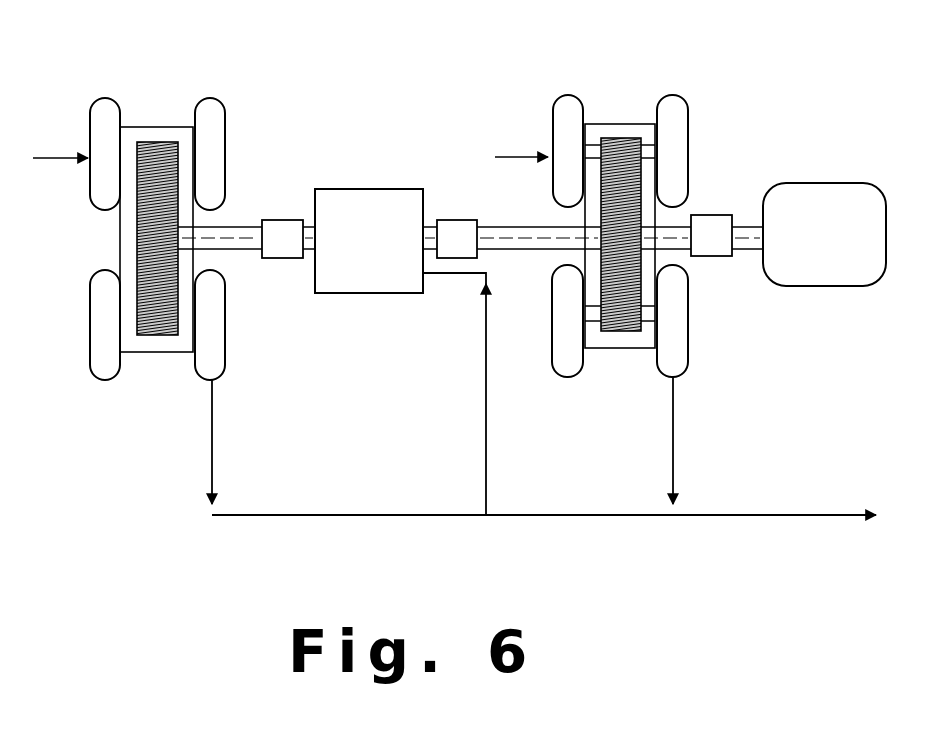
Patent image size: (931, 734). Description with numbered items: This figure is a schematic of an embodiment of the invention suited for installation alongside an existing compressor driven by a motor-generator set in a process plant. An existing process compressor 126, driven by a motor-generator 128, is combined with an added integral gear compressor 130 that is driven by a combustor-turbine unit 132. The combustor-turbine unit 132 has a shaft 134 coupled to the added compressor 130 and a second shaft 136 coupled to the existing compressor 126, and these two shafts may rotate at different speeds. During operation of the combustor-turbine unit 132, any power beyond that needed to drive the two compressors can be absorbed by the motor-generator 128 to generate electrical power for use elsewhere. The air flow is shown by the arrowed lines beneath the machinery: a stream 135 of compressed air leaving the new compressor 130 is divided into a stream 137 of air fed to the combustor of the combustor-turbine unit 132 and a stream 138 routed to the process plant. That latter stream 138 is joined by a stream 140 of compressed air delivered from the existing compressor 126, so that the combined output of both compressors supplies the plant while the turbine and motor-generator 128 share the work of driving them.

The existing process compressor 126 is at (617, 109).
The motor-generator 128 is at (824, 234).
The integral gear compressor 130 is at (155, 116).
The combustor-turbine unit 132 is at (369, 241).
The shaft 134 is at (310, 220).
The stream of compressed air 135 is at (212, 422).
The shaft 136 is at (430, 220).
The stream of air to the combustor 137 is at (486, 459).
The stream to the process plant 138 is at (579, 515).
The stream of compressed air from the existing compressor 140 is at (673, 438).